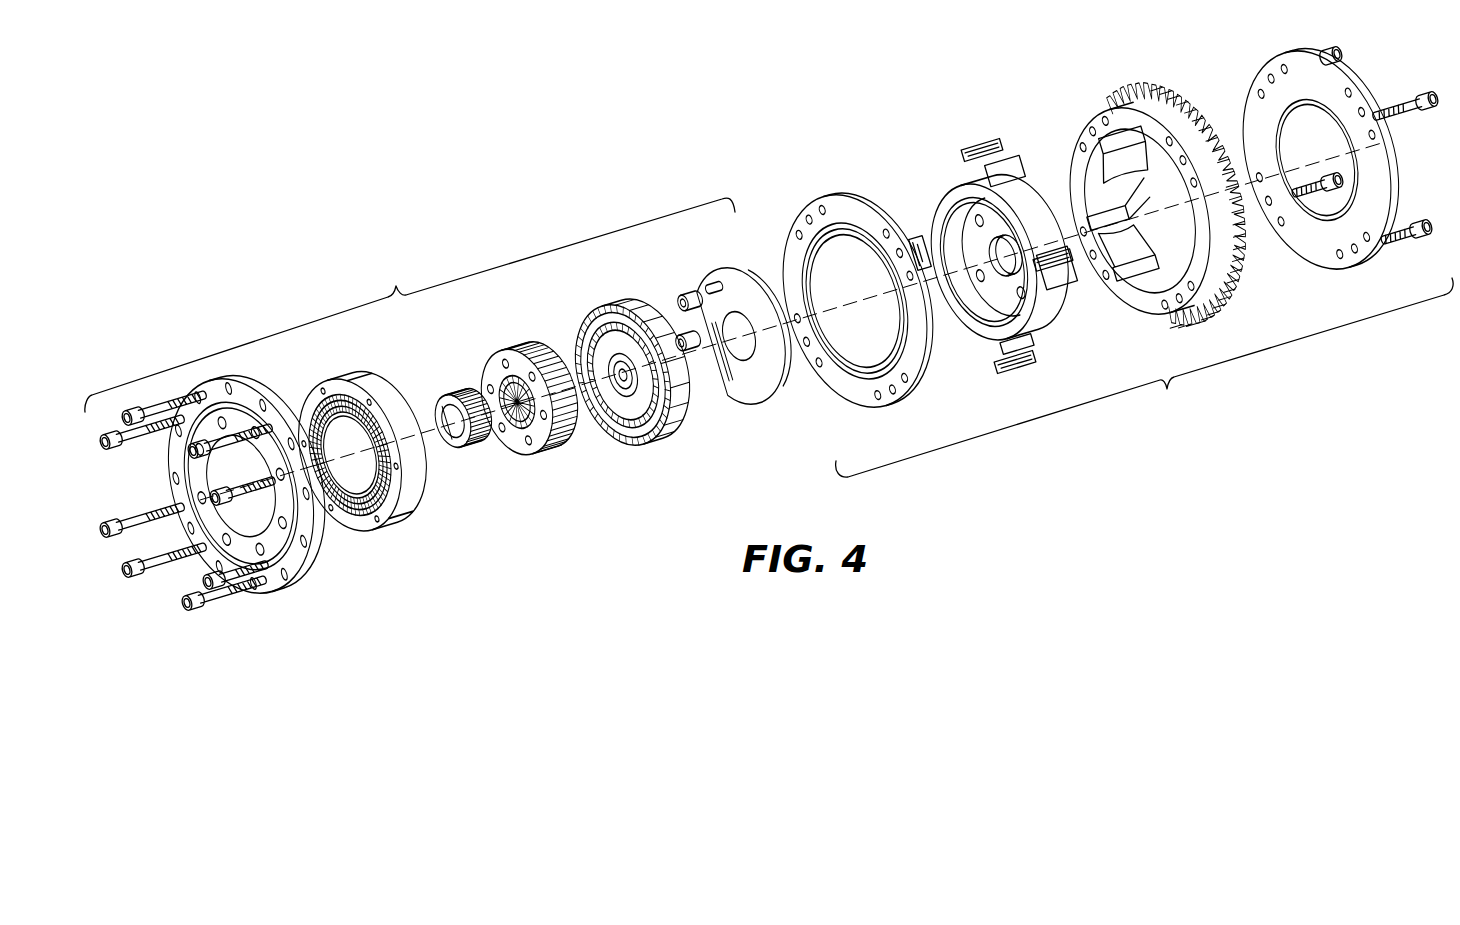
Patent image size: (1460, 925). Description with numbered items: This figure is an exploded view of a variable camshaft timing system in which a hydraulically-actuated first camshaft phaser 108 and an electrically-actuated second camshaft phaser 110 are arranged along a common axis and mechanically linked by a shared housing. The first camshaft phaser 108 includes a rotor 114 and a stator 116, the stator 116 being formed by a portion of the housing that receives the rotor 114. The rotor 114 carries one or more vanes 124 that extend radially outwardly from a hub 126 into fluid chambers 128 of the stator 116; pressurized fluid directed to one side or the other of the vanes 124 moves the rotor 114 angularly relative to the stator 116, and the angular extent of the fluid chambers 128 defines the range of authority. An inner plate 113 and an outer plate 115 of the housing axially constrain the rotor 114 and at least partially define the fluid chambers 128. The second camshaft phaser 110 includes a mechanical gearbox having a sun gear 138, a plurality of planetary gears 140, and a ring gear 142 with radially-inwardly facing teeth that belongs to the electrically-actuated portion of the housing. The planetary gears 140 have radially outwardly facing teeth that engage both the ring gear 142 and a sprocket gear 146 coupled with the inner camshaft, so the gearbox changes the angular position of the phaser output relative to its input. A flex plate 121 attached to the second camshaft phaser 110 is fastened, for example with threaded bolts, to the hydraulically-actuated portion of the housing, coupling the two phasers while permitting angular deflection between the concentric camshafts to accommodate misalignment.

The first camshaft phaser 108 is at (1145, 377).
The second camshaft phaser 110 is at (410, 305).
The inner plate 113 is at (1342, 270).
The rotor 114 is at (1050, 136).
The outer plate 115 is at (870, 410).
The stator 116 is at (1157, 204).
The flex plate 121 is at (287, 587).
The vanes 124 is at (922, 230).
The hub 126 is at (1050, 194).
The fluid chambers 128 is at (1112, 185).
The sun gear 138 is at (452, 383).
The planetary gears 140 is at (548, 345).
The ring gear 142 is at (336, 512).
The sprocket gear 146 is at (610, 428).